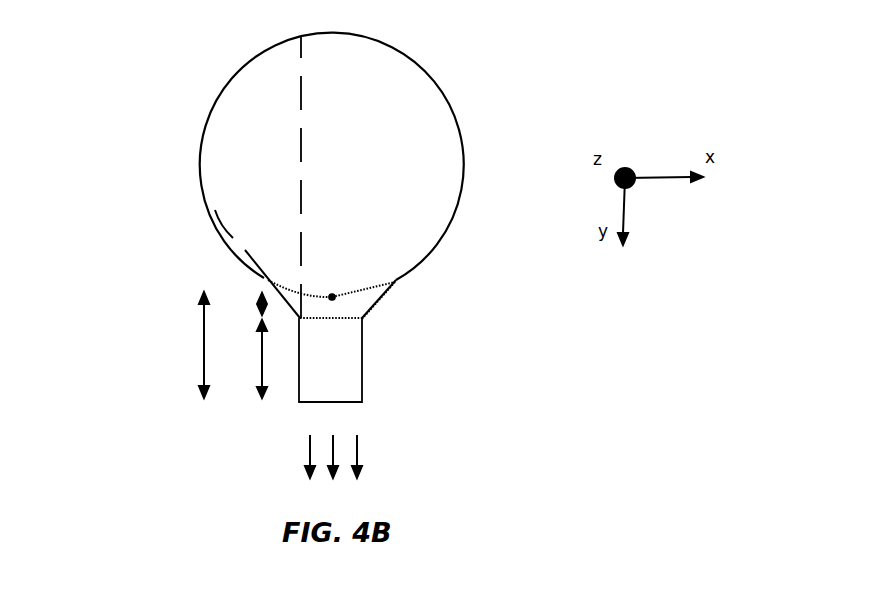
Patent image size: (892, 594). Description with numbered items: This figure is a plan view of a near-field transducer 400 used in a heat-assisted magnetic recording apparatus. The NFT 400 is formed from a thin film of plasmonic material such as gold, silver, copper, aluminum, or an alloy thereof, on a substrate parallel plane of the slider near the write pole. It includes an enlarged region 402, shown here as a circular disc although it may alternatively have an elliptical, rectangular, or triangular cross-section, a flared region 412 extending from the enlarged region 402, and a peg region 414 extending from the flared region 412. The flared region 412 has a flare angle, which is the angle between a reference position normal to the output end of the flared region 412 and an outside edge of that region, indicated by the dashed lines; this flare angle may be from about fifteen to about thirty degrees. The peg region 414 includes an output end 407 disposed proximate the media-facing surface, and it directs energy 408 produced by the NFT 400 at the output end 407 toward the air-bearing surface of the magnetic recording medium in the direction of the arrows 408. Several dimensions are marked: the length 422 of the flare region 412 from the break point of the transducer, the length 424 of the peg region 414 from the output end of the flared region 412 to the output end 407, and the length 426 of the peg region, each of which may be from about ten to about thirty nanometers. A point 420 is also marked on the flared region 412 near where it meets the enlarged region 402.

The near-field transducer 400 is at (190, 49).
The enlarged region 402 is at (347, 162).
The output end 407 is at (305, 402).
The energy 408 is at (367, 455).
The flared region 412 is at (330, 310).
The peg region 414 is at (342, 348).
The attachment point / tendon region 420 is at (332, 297).
The flare region length 422 is at (244, 304).
The peg region length 424 is at (246, 359).
The peg region length 426 is at (183, 345).